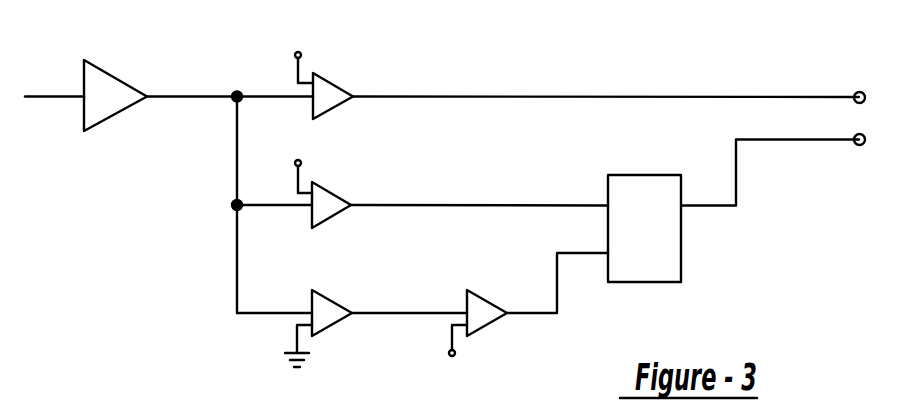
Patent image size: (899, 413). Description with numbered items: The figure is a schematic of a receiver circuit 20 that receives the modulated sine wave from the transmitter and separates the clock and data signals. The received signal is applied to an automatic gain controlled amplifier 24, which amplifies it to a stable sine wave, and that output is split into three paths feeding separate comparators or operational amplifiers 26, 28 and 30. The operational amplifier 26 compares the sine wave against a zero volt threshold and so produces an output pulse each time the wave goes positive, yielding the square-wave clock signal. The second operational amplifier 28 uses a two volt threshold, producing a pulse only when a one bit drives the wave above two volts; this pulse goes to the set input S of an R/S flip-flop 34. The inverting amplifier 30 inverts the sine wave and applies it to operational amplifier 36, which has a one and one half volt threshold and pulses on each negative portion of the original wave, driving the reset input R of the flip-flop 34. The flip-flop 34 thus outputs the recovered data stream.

The receiver circuit 20 is at (590, 57).
The automatic gain controlled amplifier 24 is at (122, 110).
The operational amplifier 26 is at (330, 80).
The second operational amplifier 28 is at (330, 192).
The inverting amplifier 30 is at (325, 296).
The R/S flip-flop 34 is at (643, 175).
The operational amplifier 36 is at (502, 302).